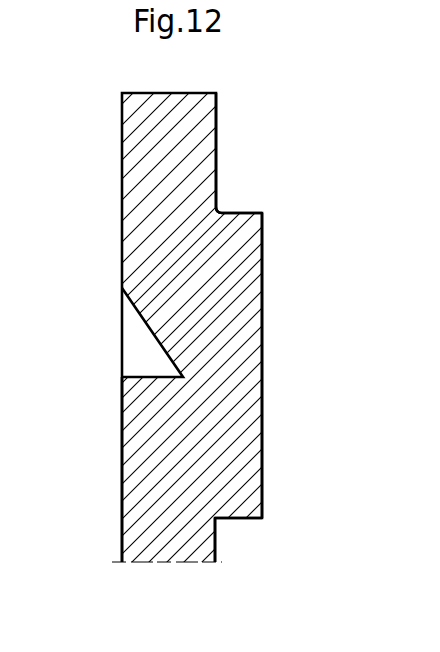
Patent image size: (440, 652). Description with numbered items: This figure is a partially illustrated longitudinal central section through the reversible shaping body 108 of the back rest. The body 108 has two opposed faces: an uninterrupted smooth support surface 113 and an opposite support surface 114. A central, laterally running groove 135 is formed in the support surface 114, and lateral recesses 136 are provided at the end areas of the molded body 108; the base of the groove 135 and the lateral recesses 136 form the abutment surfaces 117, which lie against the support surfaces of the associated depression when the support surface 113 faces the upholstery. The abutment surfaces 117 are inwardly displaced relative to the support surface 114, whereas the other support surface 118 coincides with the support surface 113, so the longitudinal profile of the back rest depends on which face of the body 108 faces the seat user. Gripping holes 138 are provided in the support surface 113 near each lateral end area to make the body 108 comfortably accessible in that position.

The body 108 is at (150, 181).
The support surface 113 is at (122, 442).
The support surface 114 is at (262, 422).
The abutment surfaces 117 is at (216, 142).
The support surface 118 is at (122, 515).
The groove 135 is at (233, 523).
The lateral recesses 136 is at (245, 212).
The gripping holes 138 is at (138, 375).